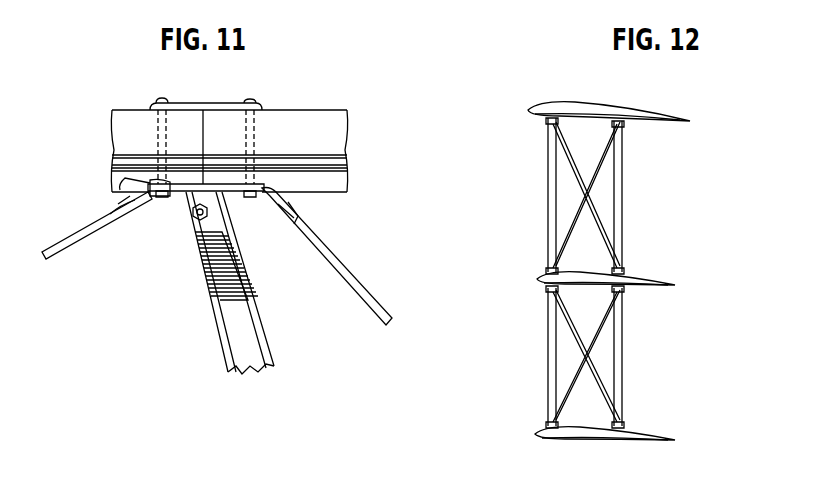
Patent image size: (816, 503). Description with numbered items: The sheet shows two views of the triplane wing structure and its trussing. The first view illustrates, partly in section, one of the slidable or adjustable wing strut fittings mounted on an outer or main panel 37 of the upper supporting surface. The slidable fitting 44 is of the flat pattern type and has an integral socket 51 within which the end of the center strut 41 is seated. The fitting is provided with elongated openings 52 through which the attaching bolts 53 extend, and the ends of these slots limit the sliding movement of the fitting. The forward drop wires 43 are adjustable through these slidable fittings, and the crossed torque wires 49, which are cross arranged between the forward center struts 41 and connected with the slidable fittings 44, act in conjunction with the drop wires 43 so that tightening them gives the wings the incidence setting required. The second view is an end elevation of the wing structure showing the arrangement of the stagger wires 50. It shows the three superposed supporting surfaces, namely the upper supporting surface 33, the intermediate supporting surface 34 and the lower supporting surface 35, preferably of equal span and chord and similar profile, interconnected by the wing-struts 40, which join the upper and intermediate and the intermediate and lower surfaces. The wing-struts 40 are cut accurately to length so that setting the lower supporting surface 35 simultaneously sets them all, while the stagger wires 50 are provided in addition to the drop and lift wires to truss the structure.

In FIG. 11, the outer or main panel 37 is at (301, 115).
In FIG. 11, the attaching bolt 53 is at (157, 122).
In FIG. 11, the slidable fitting 44 is at (192, 196).
In FIG. 11, the elongated opening 52 is at (150, 182).
In FIG. 11, the integral socket 51 is at (210, 212).
In FIG. 11, the center strut 41 is at (256, 324).
In FIG. 11, the forward drop wire 43 is at (88, 230).
In FIG. 11, the torque wire 49 is at (330, 270).
In FIG. 12, the upper supporting surface 33 is at (572, 98).
In FIG. 12, the intermediate supporting surface 34 is at (586, 294).
In FIG. 12, the lower supporting surface 35 is at (587, 449).
In FIG. 12, the wing-strut 40 is at (552, 210).
In FIG. 12, the stagger wire 50 is at (600, 170).